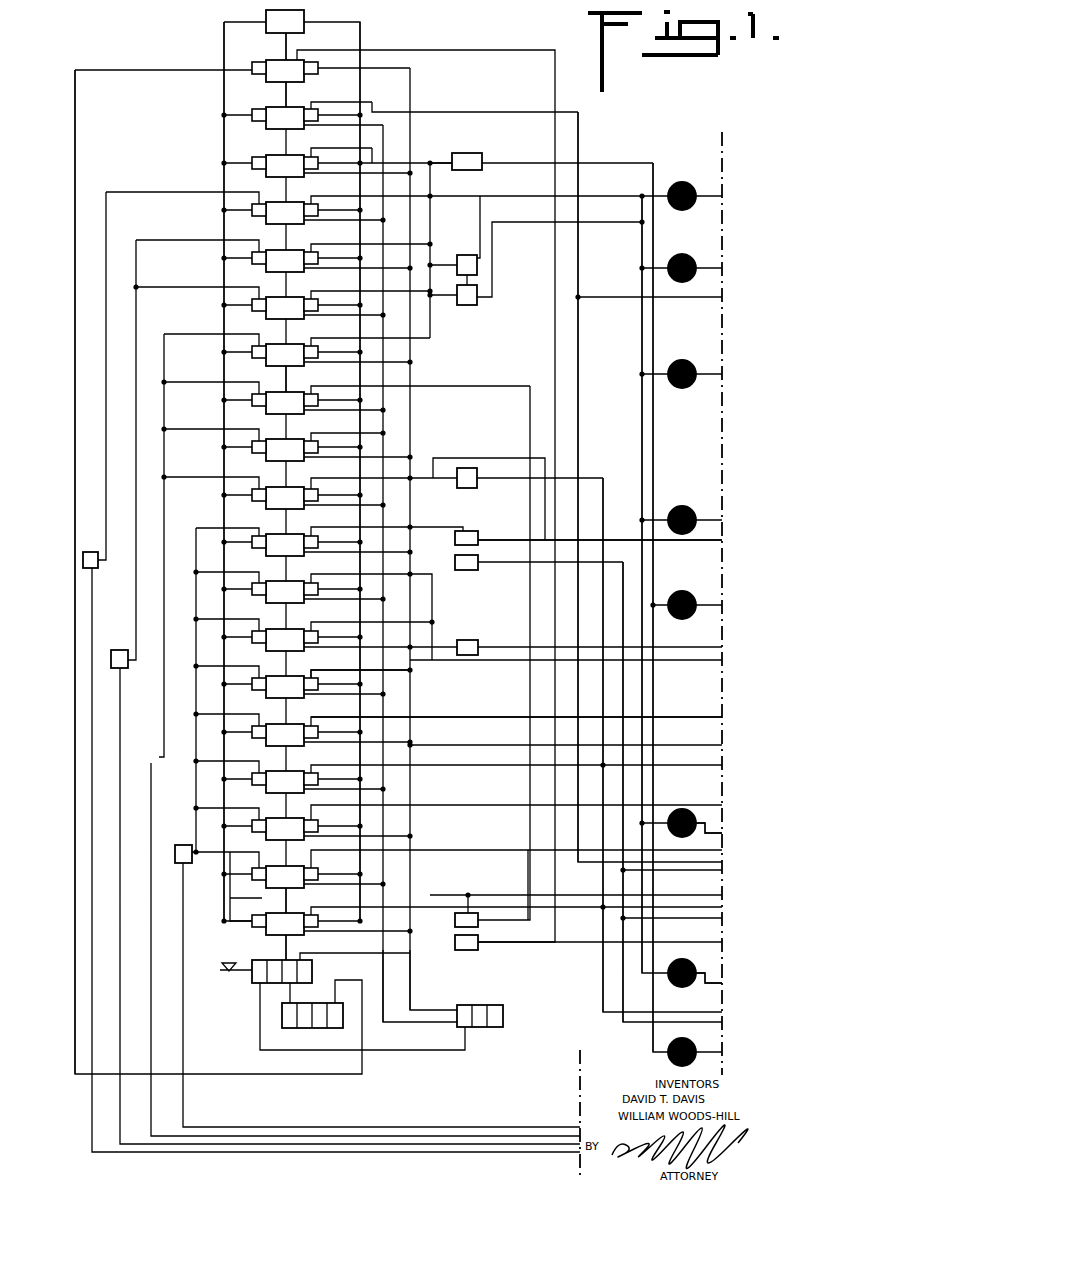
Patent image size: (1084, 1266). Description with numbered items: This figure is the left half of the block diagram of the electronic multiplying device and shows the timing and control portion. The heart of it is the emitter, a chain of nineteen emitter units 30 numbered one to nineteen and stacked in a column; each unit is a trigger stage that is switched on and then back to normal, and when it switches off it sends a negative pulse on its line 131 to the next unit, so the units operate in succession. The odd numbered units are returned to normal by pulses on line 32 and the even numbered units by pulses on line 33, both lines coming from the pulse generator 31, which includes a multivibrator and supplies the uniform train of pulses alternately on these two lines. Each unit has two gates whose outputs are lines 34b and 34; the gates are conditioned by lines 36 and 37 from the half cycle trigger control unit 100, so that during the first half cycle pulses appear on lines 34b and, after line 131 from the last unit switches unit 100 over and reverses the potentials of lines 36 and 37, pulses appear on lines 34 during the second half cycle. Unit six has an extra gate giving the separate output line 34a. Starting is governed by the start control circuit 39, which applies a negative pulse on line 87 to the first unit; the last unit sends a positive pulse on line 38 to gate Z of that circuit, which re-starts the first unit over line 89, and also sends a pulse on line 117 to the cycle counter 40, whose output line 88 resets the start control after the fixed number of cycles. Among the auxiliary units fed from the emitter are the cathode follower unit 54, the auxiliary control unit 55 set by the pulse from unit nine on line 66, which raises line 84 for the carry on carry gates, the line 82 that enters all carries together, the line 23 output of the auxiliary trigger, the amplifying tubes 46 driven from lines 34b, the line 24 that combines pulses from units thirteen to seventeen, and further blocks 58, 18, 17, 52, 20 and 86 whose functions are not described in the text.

The half cycle trigger control unit 100 is at (285, 21).
The line 131 is at (312, 472).
The line 37 is at (374, 481).
The line 38 is at (528, 522).
The line 117 is at (207, 582).
The line 36 is at (224, 96).
The emitter units 30 is at (266, 170).
The lines 34 is at (505, 501).
The line 34a is at (417, 680).
The lines 34b is at (191, 194).
The unit including a cathode follower 54 is at (480, 168).
The relay 58 is at (455, 242).
The conductor 18 is at (627, 600).
The line 24 is at (627, 584).
The amplifying tubes 46 is at (467, 486).
The line 66 is at (636, 538).
The auxiliary control unit 55 is at (478, 572).
The conductor 17 is at (600, 646).
The switch 52 is at (156, 644).
The line 82 is at (631, 792).
The line 84 is at (516, 829).
The lamp circuit connection 20 is at (694, 844).
The line 23 is at (692, 946).
The line 87 is at (284, 950).
The line 89 is at (304, 953).
The start control circuit 39 is at (255, 985).
The counter output line 88 is at (288, 1000).
The cycle counter 40 is at (332, 1030).
The conductor 86 is at (428, 1058).
The line 32 is at (412, 985).
The line 33 is at (383, 1014).
The pulse generator 31 is at (468, 1009).